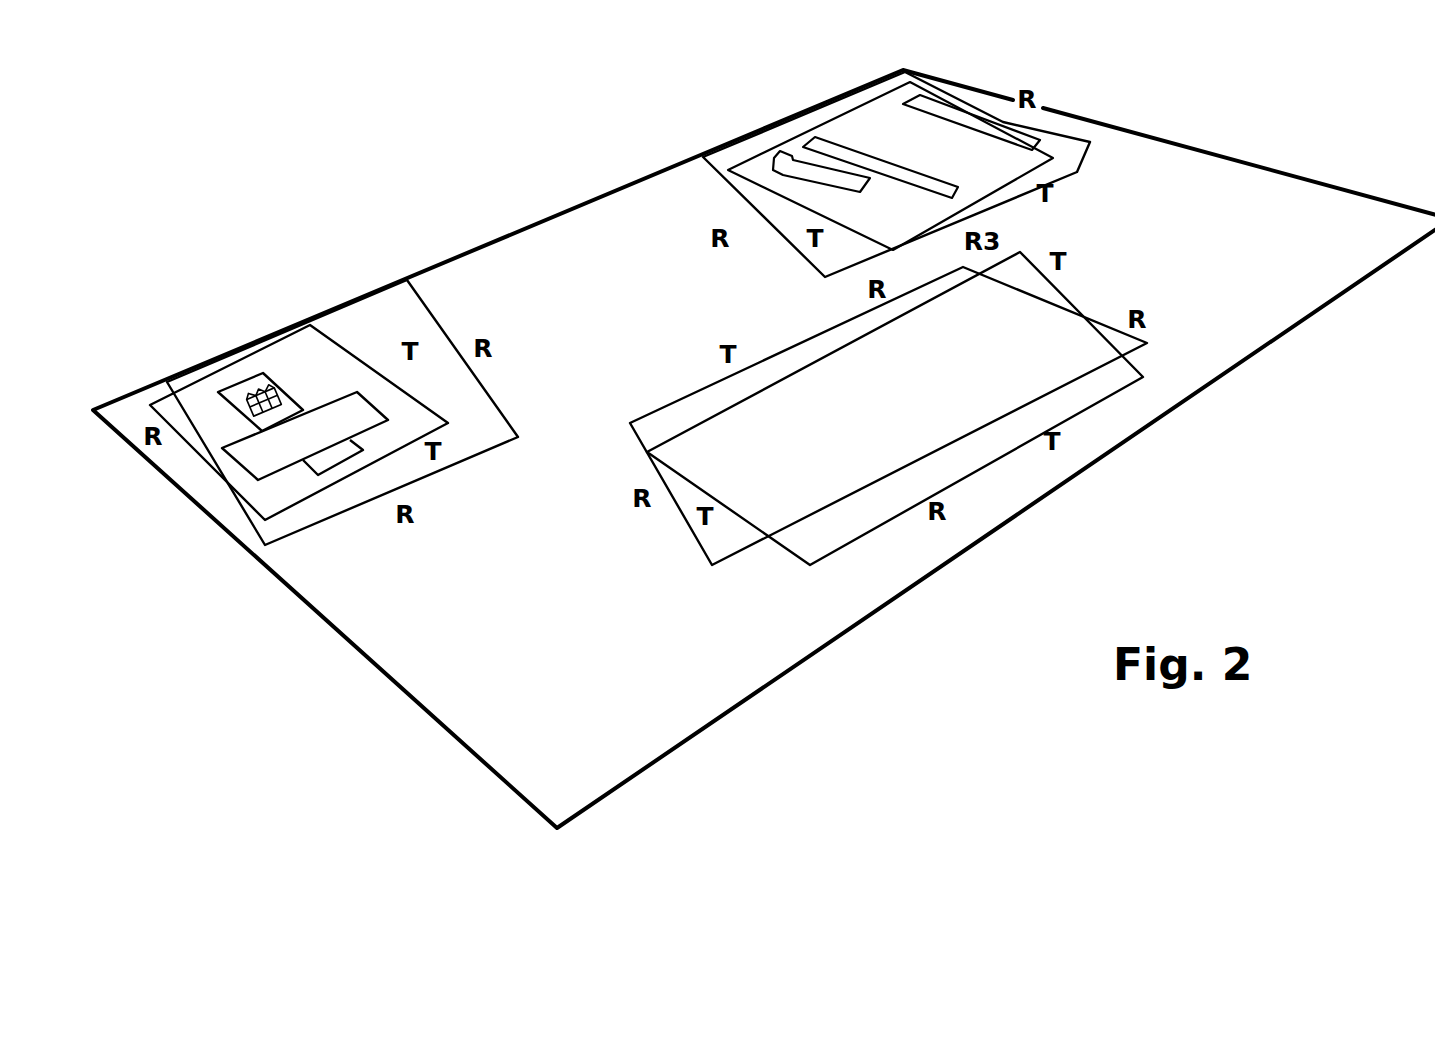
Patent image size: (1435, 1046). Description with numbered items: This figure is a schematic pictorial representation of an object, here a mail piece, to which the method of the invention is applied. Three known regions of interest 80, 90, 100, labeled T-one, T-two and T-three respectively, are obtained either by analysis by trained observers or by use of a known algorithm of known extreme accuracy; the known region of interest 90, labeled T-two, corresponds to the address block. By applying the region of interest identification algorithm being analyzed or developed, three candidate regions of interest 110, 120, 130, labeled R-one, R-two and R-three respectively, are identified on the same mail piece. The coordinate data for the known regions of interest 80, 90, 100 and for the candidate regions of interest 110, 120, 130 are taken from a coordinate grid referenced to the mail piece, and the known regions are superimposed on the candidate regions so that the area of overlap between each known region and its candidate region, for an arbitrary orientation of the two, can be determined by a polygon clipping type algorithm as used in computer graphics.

The known region of interest T1 80 is at (199, 466).
The known region of interest T2 90 is at (823, 548).
The known region of interest T3 100 is at (1068, 133).
The candidate region of interest R1 110 is at (380, 313).
The candidate region of interest R2 120 is at (724, 547).
The candidate region of interest R3 130 is at (775, 214).